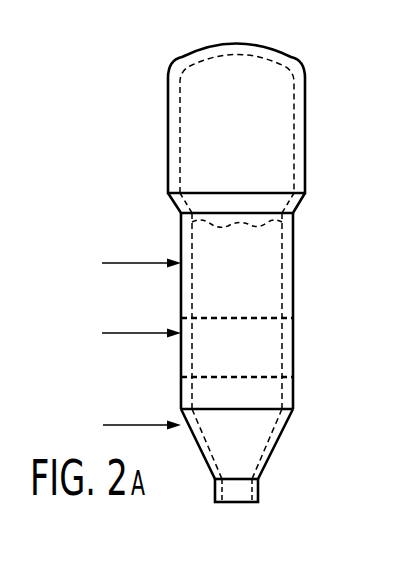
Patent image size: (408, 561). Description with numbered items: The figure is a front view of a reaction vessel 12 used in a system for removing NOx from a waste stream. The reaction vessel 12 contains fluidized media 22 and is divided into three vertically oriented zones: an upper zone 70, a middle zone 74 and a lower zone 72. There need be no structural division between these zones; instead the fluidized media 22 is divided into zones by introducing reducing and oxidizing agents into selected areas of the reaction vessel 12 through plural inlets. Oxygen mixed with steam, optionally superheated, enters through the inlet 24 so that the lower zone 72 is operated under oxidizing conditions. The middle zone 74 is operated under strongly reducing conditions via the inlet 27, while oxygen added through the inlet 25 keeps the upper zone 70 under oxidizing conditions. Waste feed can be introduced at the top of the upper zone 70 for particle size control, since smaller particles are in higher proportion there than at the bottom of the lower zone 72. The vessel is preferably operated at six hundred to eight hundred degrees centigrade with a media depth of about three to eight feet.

The reaction vessel 12 is at (215, 45).
The upper zone 70 is at (247, 276).
The middle zone 74 is at (256, 344).
The lower zone 72 is at (256, 427).
The fluidized media 22 is at (240, 444).
The inlet 25 is at (124, 263).
The inlet 27 is at (124, 333).
The inlet 24 is at (150, 425).